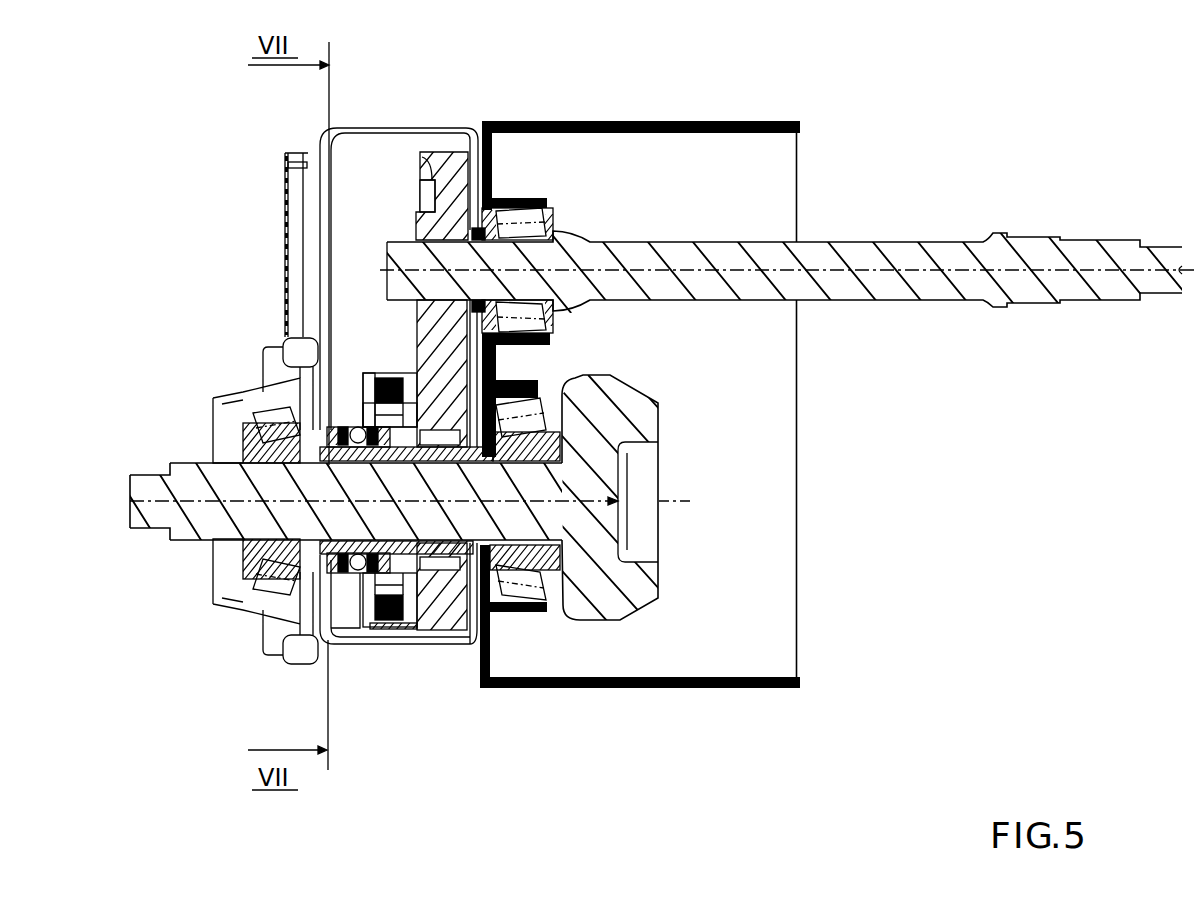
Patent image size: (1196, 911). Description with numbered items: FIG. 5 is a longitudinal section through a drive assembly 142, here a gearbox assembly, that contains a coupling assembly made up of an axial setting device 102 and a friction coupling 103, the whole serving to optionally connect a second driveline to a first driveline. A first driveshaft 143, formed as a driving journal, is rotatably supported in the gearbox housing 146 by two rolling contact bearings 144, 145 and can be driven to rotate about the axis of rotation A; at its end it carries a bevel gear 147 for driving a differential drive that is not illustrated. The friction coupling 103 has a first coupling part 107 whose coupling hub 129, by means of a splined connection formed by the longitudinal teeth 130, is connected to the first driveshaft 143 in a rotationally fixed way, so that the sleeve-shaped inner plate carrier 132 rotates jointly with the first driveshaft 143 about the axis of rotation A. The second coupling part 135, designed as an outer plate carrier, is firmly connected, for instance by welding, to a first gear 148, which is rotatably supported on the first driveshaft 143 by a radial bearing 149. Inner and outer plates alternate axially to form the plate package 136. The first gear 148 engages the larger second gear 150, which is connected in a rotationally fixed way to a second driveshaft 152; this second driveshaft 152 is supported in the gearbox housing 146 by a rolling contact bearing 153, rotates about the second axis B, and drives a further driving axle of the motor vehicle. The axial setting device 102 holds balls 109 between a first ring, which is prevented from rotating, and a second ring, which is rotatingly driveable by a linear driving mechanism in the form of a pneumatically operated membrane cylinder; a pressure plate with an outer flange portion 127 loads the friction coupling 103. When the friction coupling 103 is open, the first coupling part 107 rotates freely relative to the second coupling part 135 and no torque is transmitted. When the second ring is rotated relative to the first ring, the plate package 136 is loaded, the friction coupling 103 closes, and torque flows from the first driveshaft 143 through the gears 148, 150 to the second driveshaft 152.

The axial setting device 102 is at (345, 605).
The friction coupling 103 is at (385, 652).
The first coupling part 107 is at (320, 638).
The balls 109 is at (356, 554).
The outer flange portion 127 is at (365, 378).
The coupling hub 129 is at (380, 458).
The longitudinal teeth 130 is at (343, 450).
The inner plate carrier 132 is at (430, 459).
The second coupling part 135 is at (398, 380).
The plate package 136 is at (398, 627).
The gearbox assembly 142 is at (556, 86).
The first driveshaft 143 is at (192, 528).
The rolling contact bearing 144 is at (255, 580).
The rolling contact bearing 145 is at (520, 598).
The gearbox housing 146 is at (377, 130).
The bevel gear 147 is at (620, 607).
The first gear 148 is at (452, 632).
The radial bearing 149 is at (462, 565).
The second gear 150 is at (449, 172).
The second driveshaft 152 is at (853, 260).
The rolling contact bearing 153 is at (548, 208).
The axis of rotation A is at (143, 498).
The second axis B is at (960, 268).